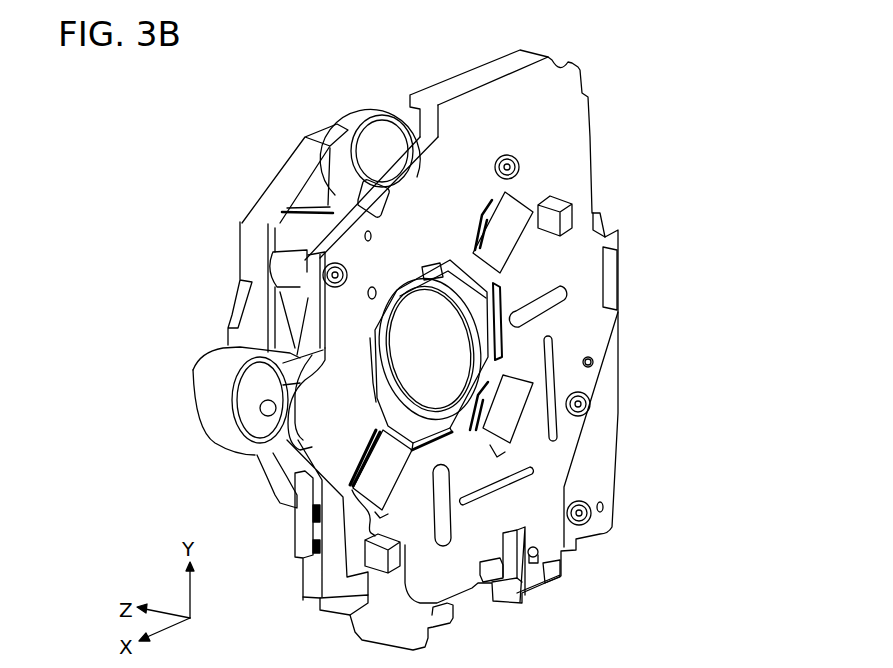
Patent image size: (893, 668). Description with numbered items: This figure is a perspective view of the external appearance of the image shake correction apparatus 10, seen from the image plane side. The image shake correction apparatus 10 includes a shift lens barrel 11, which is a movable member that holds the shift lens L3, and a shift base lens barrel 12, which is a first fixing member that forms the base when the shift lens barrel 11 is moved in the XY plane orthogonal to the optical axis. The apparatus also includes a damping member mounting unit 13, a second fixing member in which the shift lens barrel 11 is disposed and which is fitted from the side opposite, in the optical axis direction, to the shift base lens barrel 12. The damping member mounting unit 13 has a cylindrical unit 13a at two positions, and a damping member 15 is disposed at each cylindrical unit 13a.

The image shake correction apparatus 10 is at (657, 156).
The shift lens barrel 11 is at (407, 295).
The shift base lens barrel 12 is at (583, 125).
The damping member mounting unit 13 is at (290, 172).
The cylindrical unit 13a is at (355, 112).
The damping member 15 is at (382, 138).
The shift lens L3 is at (442, 350).